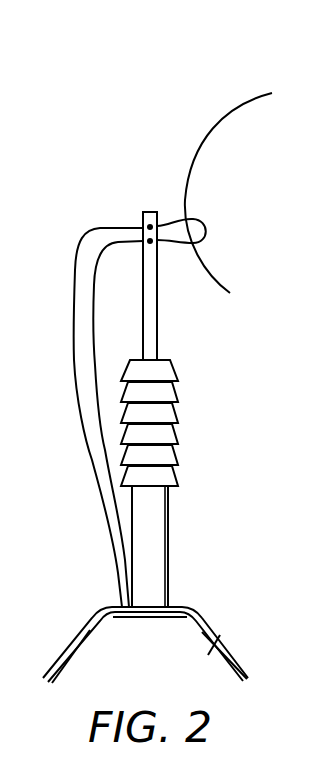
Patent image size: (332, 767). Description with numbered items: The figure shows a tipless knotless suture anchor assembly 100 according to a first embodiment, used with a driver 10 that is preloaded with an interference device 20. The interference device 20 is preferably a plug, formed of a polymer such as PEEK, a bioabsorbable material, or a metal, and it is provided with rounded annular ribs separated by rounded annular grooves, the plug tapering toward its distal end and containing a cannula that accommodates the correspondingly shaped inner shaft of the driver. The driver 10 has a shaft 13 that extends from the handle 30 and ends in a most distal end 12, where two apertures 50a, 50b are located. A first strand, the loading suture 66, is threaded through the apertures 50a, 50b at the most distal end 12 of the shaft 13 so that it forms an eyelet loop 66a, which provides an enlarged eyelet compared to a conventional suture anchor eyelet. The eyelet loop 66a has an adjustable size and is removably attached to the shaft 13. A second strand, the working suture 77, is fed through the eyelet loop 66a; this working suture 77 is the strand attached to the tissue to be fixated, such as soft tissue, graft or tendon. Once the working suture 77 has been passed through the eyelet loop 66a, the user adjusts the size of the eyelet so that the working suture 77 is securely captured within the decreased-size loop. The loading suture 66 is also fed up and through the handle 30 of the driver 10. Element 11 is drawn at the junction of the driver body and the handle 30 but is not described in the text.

The knotless suture anchor assembly 100 is at (125, 66).
The second strand (working suture) 77 is at (238, 108).
The most distal end 12 is at (153, 257).
The shaft 13 is at (153, 328).
The aperture 50a is at (150, 224).
The aperture 50b is at (148, 241).
The first strand (loading suture) 66 is at (73, 283).
The eyelet loop 66a is at (208, 230).
The interference device 20 is at (167, 453).
The driver 10 is at (160, 553).
The insulator flange 11 is at (173, 606).
The handle 30 is at (224, 640).